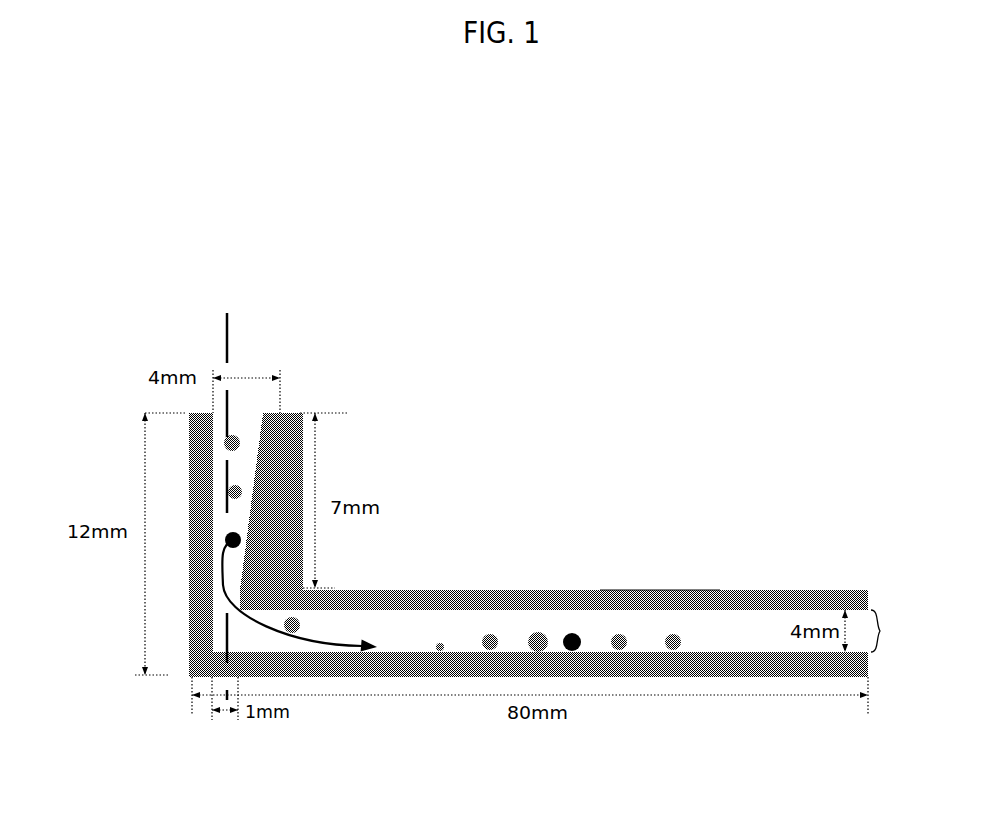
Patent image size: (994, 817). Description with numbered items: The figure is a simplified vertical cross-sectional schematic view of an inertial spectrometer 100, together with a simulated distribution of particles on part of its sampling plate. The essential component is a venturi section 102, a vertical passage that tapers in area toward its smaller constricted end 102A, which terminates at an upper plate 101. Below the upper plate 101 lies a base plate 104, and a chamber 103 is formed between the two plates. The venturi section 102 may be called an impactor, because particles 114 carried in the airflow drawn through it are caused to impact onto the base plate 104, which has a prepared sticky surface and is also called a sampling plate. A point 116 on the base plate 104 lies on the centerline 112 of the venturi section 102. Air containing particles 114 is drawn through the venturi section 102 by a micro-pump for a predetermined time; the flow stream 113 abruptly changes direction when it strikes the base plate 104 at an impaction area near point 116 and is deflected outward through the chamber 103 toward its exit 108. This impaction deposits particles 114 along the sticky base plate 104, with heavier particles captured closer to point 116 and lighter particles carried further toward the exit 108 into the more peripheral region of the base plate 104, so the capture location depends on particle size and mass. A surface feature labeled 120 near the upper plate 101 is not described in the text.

The inertial spectrometer 100 is at (471, 484).
The upper plate 101 is at (554, 543).
The venturi section 102 is at (403, 490).
The constricted end 102A is at (252, 598).
The chamber 103 is at (549, 576).
The base plate 104 is at (690, 672).
The exit 108 is at (880, 631).
The centerline 112 is at (240, 418).
The flow stream 113 is at (205, 608).
The particles 114 is at (538, 634).
The point 116 is at (223, 645).
The upper wall surface 120 is at (656, 588).